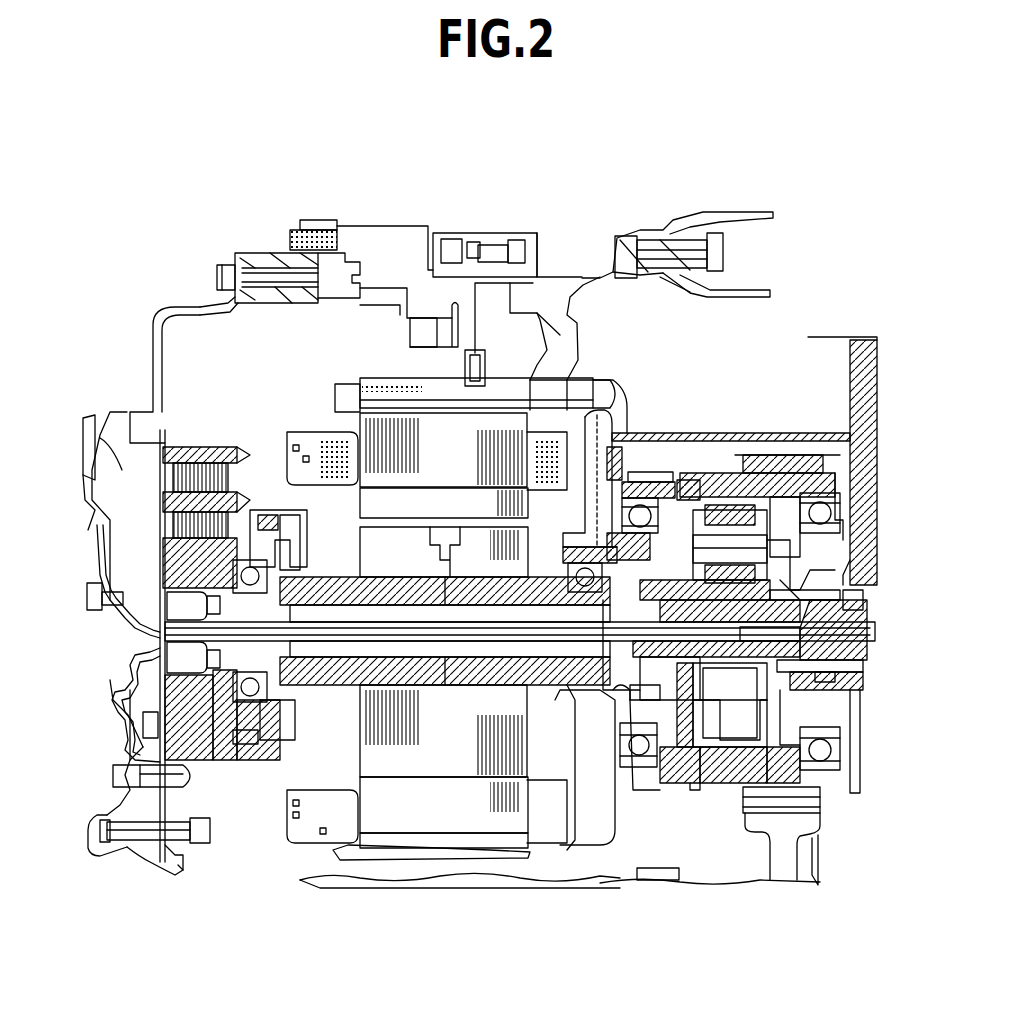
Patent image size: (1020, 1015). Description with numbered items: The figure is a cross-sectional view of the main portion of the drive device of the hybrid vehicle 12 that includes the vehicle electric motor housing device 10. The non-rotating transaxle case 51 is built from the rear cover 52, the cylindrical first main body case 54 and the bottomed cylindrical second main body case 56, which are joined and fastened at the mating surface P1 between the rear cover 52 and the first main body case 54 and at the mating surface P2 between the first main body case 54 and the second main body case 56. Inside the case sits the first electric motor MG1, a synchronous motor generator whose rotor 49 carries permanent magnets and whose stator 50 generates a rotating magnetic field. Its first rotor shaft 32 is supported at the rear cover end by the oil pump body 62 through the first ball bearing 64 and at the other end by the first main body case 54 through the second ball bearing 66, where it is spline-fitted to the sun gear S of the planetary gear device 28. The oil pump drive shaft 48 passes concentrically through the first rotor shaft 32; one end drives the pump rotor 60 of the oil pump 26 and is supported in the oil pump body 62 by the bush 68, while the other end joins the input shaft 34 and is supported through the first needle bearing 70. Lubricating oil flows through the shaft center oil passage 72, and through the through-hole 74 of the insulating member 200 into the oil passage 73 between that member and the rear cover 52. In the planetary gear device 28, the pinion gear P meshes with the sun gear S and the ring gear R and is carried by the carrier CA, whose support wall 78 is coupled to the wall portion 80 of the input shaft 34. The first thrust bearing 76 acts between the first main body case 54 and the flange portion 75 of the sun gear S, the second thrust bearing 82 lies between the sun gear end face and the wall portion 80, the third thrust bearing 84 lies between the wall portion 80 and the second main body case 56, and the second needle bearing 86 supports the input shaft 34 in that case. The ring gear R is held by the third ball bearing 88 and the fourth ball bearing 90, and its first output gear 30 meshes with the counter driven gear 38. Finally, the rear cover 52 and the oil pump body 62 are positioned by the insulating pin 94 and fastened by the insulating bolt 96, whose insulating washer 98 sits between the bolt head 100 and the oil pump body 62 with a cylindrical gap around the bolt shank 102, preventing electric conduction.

The vehicle electric motor housing device 10 is at (115, 170).
The hybrid vehicle 12 is at (815, 84).
The transaxle case 51 is at (170, 272).
The mating surface P1 is at (272, 262).
The mating surface P2 is at (675, 235).
The first electric motor MG1 is at (292, 385).
The stator 50 is at (395, 372).
The first main body case 54 is at (570, 385).
The planetary gear device 28 is at (775, 388).
The support wall 78 is at (770, 520).
The second main body case 56 is at (776, 440).
The first thrust bearing 76 is at (663, 565).
The pinion gear P is at (715, 530).
The insulating member 200 is at (115, 440).
The rear cover 52 is at (120, 480).
The oil passage 73 is at (95, 550).
The first ball bearing 64 is at (245, 570).
The rotor 49 is at (365, 507).
The first rotor shaft 32 is at (314, 592).
The pump rotor 60 is at (178, 612).
The through-hole 74 is at (165, 640).
The fourth ball bearing 90 is at (840, 512).
The carrier CA is at (785, 548).
The second thrust bearing 82 is at (795, 585).
The input shaft 34 is at (845, 616).
The shaft center oil passage 72 is at (800, 640).
The third thrust bearing 84 is at (820, 662).
The second needle bearing 86 is at (832, 690).
The wall portion 80 is at (828, 722).
The oil pump 26 is at (186, 717).
The bush 68 is at (200, 705).
The oil pump body 62 is at (282, 762).
The oil pump drive shaft 48 is at (303, 642).
The insulating pin 94 is at (148, 777).
The bolt head 100 is at (208, 835).
The insulating washer 98 is at (190, 850).
The bolt shank 102 is at (135, 832).
The insulating bolt 96 is at (248, 880).
The third ball bearing 88 is at (600, 700).
The flange portion 75 is at (672, 690).
The ring gear R is at (702, 775).
The sun gear S is at (728, 694).
The counter driven gear 38 is at (760, 818).
The first output gear 30 is at (812, 798).
The second ball bearing 66 is at (565, 695).
The first needle bearing 70 is at (600, 705).